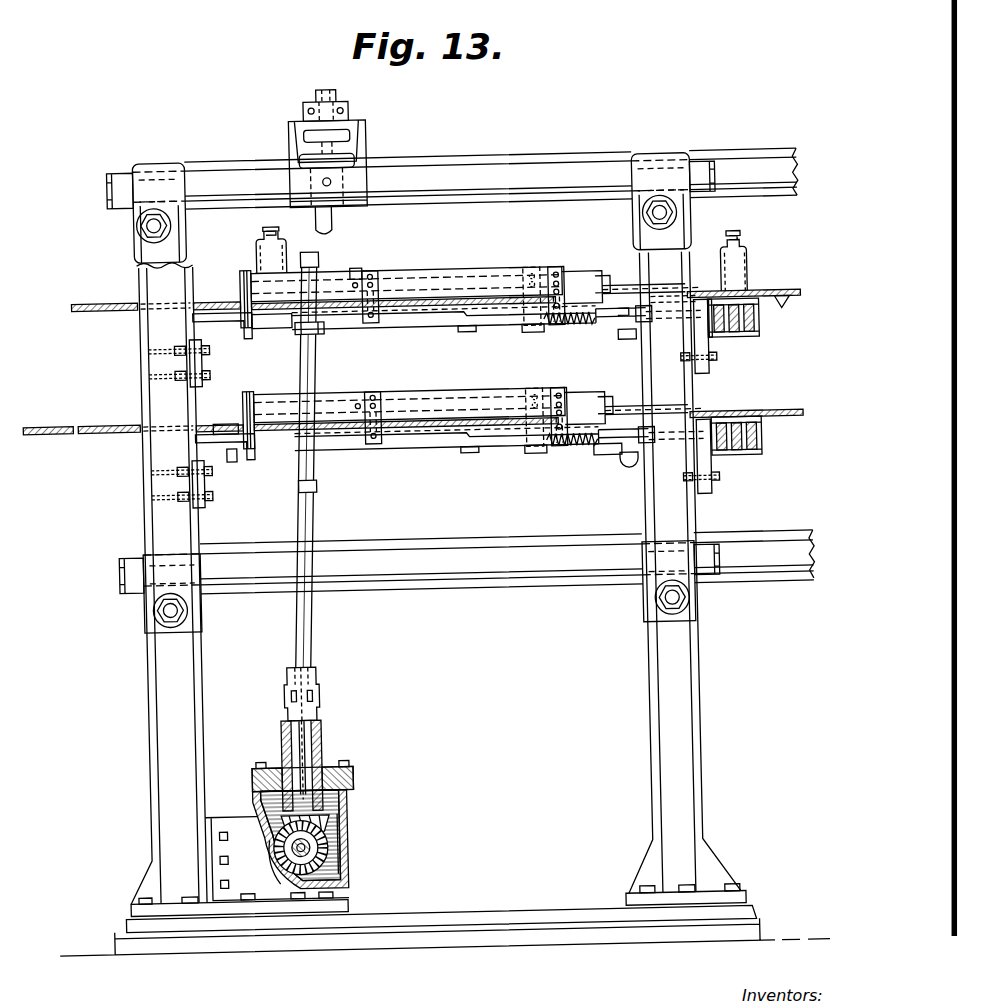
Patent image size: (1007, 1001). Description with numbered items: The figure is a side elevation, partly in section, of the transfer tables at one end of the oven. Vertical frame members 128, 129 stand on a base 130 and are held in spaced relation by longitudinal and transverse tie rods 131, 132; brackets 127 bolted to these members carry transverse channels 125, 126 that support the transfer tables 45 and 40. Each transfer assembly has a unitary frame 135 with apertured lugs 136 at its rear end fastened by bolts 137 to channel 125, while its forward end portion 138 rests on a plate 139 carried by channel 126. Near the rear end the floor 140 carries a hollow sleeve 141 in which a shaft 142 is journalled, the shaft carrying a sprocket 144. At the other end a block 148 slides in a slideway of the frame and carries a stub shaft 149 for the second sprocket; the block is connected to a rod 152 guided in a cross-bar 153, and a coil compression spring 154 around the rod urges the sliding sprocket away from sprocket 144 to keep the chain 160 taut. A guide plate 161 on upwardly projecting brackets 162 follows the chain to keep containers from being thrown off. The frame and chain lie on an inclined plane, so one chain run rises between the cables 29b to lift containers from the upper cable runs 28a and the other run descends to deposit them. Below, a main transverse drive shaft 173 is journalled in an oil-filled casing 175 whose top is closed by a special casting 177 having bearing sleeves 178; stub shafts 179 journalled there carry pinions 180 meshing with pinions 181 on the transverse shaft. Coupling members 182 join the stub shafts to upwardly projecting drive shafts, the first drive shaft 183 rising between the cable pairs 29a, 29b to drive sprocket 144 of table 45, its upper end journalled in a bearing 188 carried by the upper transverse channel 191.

The upper cable run 28a is at (196, 297).
The conveyor cable pair 29a is at (55, 415).
The conveyor cable pair 29b is at (93, 424).
The transfer table 40 is at (456, 386).
The transfer table 45 is at (439, 267).
The transverse channel 125 is at (222, 310).
The transverse channel 126 is at (733, 342).
The bracket 127 is at (211, 356).
The vertical frame member 128 is at (164, 712).
The vertical frame member 129 is at (682, 702).
The base 130 is at (475, 915).
The tie rod 131 is at (533, 166).
The tie rod 132 is at (158, 219).
The unitary frame 135 is at (448, 317).
The apertured lug 136 is at (226, 424).
The bolt 137 is at (238, 450).
The forward end portion 138 is at (661, 357).
The plate 139 is at (716, 342).
The floor 140 is at (283, 320).
The hollow sleeve 141 is at (328, 326).
The shaft 142 is at (319, 480).
The sprocket 144 is at (362, 264).
The slidable block 148 is at (617, 454).
The stub shaft 149 is at (630, 470).
The rod 152 is at (536, 325).
The cross-bar 153 is at (539, 334).
The coil compression spring 154 is at (581, 328).
The transfer chain 160 is at (487, 280).
The guide plate 161 is at (251, 264).
The bracket 162 is at (567, 288).
The main transverse drive shaft 173 is at (318, 876).
The casing 175 is at (343, 800).
The special casting 177 is at (341, 765).
The bearing sleeve 178 is at (320, 738).
The stub shaft 179 is at (320, 820).
The pinion 180 is at (320, 843).
The pinion 181 is at (300, 851).
The coupling member 182 is at (316, 681).
The drive shaft 183 is at (348, 220).
The bearing 188 is at (313, 105).
The upper transverse channel 191 is at (376, 134).